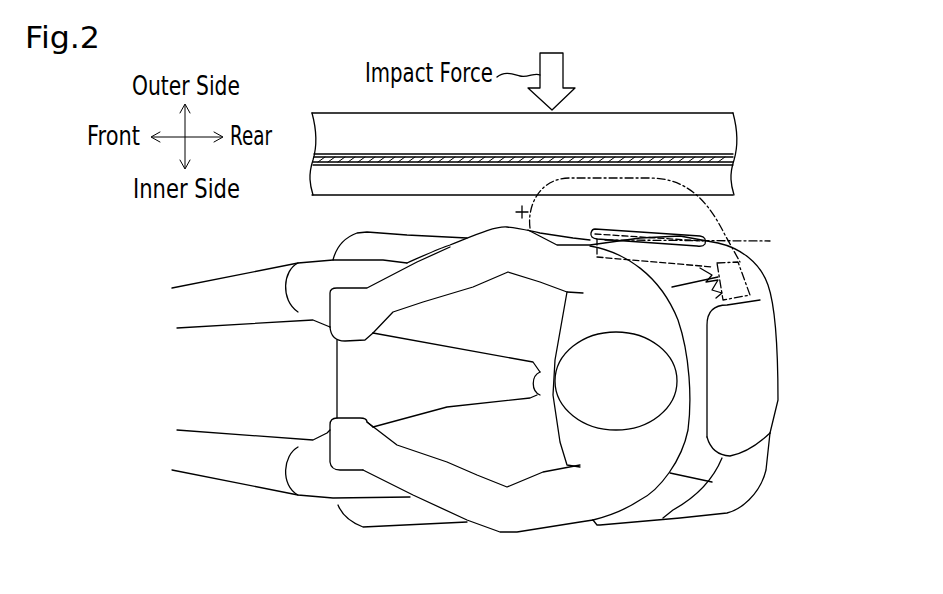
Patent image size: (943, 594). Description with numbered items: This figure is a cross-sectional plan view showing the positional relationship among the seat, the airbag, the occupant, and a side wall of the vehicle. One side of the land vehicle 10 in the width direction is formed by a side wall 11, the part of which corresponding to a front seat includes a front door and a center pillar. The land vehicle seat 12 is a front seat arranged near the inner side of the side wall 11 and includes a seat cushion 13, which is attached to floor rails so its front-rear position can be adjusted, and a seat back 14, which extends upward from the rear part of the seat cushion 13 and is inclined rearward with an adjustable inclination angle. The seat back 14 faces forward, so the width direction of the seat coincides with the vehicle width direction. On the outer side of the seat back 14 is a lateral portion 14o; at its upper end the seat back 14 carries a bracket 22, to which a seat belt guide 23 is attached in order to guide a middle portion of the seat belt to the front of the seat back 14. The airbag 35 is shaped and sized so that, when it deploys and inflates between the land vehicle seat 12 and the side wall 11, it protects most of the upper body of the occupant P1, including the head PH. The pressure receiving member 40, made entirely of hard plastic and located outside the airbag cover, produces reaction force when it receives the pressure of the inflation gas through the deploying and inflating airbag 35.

The land vehicle 10 is at (528, 130).
The side wall 11 is at (665, 132).
The land vehicle seat 12 is at (747, 228).
The seat cushion 13 is at (353, 381).
The seat back 14 is at (733, 500).
The outer side lateral portion 14o is at (703, 247).
The bracket 22 is at (706, 244).
The seat belt guide 23 is at (750, 294).
The airbag 35 is at (592, 178).
The pressure receiving member 40 is at (605, 258).
The occupant P1 is at (690, 377).
The head PH is at (613, 428).